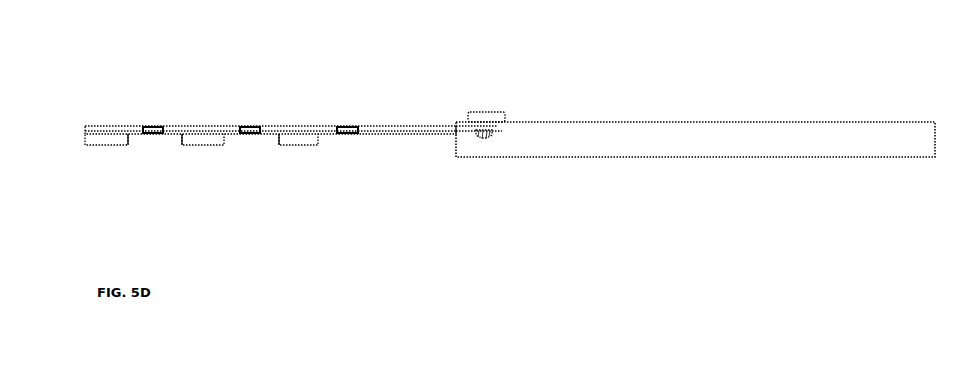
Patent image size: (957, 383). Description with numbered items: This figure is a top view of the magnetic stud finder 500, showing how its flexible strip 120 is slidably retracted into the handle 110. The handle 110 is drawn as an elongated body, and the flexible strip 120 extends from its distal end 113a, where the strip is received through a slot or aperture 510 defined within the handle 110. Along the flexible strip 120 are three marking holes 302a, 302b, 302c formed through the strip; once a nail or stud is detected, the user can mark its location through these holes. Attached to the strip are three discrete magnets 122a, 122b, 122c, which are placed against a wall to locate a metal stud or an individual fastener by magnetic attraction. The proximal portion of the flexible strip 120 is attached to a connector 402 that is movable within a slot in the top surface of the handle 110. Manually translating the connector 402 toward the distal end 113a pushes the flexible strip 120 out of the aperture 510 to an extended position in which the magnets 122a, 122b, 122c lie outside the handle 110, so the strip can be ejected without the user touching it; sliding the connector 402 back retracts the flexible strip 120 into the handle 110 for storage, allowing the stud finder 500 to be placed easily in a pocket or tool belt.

The magnetic stud finder 500 is at (772, 97).
The handle 110 is at (620, 157).
The flexible strip 120 is at (375, 125).
The slot or aperture 510 is at (433, 217).
The distal end 113a is at (433, 217).
The connector 402 is at (497, 111).
The marking hole 302a is at (152, 126).
The marking hole 302b is at (252, 126).
The marking hole 302c is at (347, 126).
The magnet 122a is at (297, 146).
The magnet 122b is at (203, 146).
The magnet 122c is at (105, 146).